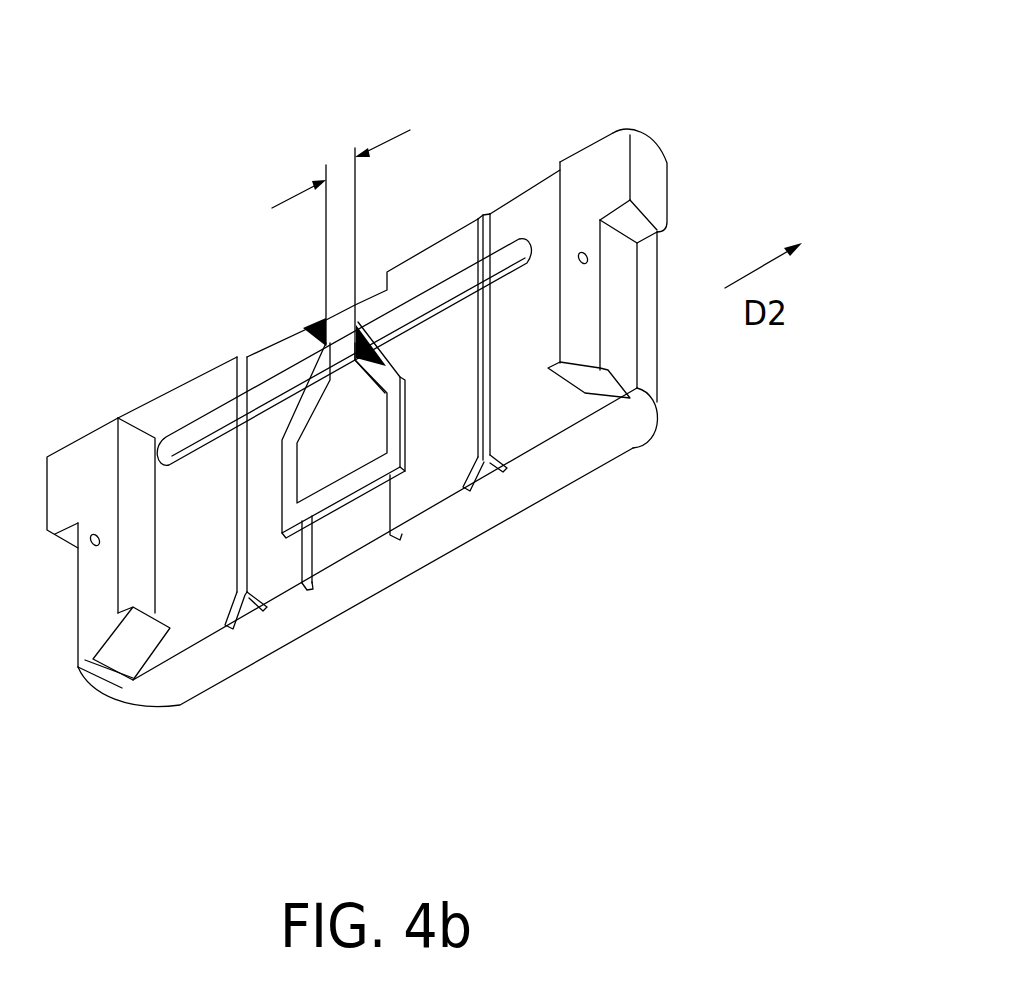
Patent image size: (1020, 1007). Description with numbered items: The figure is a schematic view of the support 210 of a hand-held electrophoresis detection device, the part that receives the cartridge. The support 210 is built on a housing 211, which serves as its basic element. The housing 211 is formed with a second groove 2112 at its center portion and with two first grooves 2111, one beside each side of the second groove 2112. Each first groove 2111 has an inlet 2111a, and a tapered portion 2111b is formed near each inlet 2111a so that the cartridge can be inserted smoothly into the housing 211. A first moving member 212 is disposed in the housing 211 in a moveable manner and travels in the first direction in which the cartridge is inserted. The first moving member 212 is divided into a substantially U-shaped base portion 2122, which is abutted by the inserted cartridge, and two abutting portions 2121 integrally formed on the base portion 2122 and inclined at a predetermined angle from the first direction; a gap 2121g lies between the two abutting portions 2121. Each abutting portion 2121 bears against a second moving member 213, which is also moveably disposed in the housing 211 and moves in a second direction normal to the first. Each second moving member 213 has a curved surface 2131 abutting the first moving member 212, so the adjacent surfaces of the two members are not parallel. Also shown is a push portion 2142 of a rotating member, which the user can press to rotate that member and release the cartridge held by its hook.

The support 210 is at (717, 204).
The housing 211 is at (538, 222).
The first groove 2111 is at (525, 475).
The inlet 2111a is at (491, 468).
The tapered portion 2111b is at (478, 466).
The second groove 2112 is at (318, 563).
The first moving member 212 is at (331, 417).
The abutting portion 2121 is at (361, 216).
The gap 2121g is at (345, 150).
The base portion 2122 is at (350, 483).
The second moving member 213 is at (178, 445).
The curved surface 2131 is at (302, 352).
The push portion 2142 is at (650, 187).